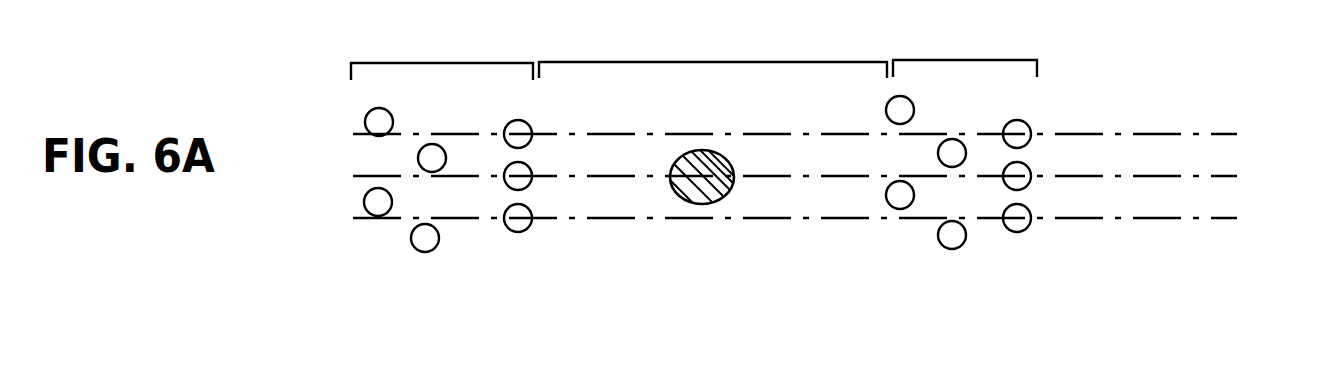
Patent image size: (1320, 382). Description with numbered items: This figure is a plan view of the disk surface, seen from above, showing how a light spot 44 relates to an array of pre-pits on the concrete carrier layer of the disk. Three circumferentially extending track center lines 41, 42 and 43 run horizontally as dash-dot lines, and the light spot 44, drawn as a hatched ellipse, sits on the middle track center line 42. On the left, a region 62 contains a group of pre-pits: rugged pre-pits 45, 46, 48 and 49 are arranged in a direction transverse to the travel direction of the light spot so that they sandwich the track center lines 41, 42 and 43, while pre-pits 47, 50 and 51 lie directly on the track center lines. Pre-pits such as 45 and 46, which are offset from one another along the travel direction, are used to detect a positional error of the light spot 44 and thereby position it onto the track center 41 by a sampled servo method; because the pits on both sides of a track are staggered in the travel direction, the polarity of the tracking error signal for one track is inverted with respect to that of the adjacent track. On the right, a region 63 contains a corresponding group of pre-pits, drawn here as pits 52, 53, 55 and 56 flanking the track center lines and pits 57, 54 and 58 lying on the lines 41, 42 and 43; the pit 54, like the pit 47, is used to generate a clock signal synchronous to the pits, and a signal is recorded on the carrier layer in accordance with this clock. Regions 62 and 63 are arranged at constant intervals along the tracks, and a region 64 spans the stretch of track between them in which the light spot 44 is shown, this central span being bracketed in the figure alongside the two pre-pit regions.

The track center line 41 is at (820, 134).
The track center line 42 is at (822, 177).
The track center line 43 is at (822, 219).
The light spot 44 is at (734, 164).
The pre-pit 45 is at (390, 113).
The pre-pit 46 is at (446, 156).
The pre-pit 47 is at (529, 167).
The pre-pit 48 is at (392, 202).
The pre-pit 49 is at (436, 247).
The pre-pit 50 is at (529, 125).
The pre-pit 51 is at (529, 210).
The signal point 52 is at (911, 100).
The signal point 53 is at (938, 153).
The pit 54 is at (1028, 167).
The signal point 55 is at (914, 195).
The signal point 56 is at (962, 245).
The signal point 57 is at (1027, 124).
The signal point 58 is at (1028, 209).
The region 62 is at (442, 41).
The region 63 is at (965, 38).
The region 64 is at (713, 39).